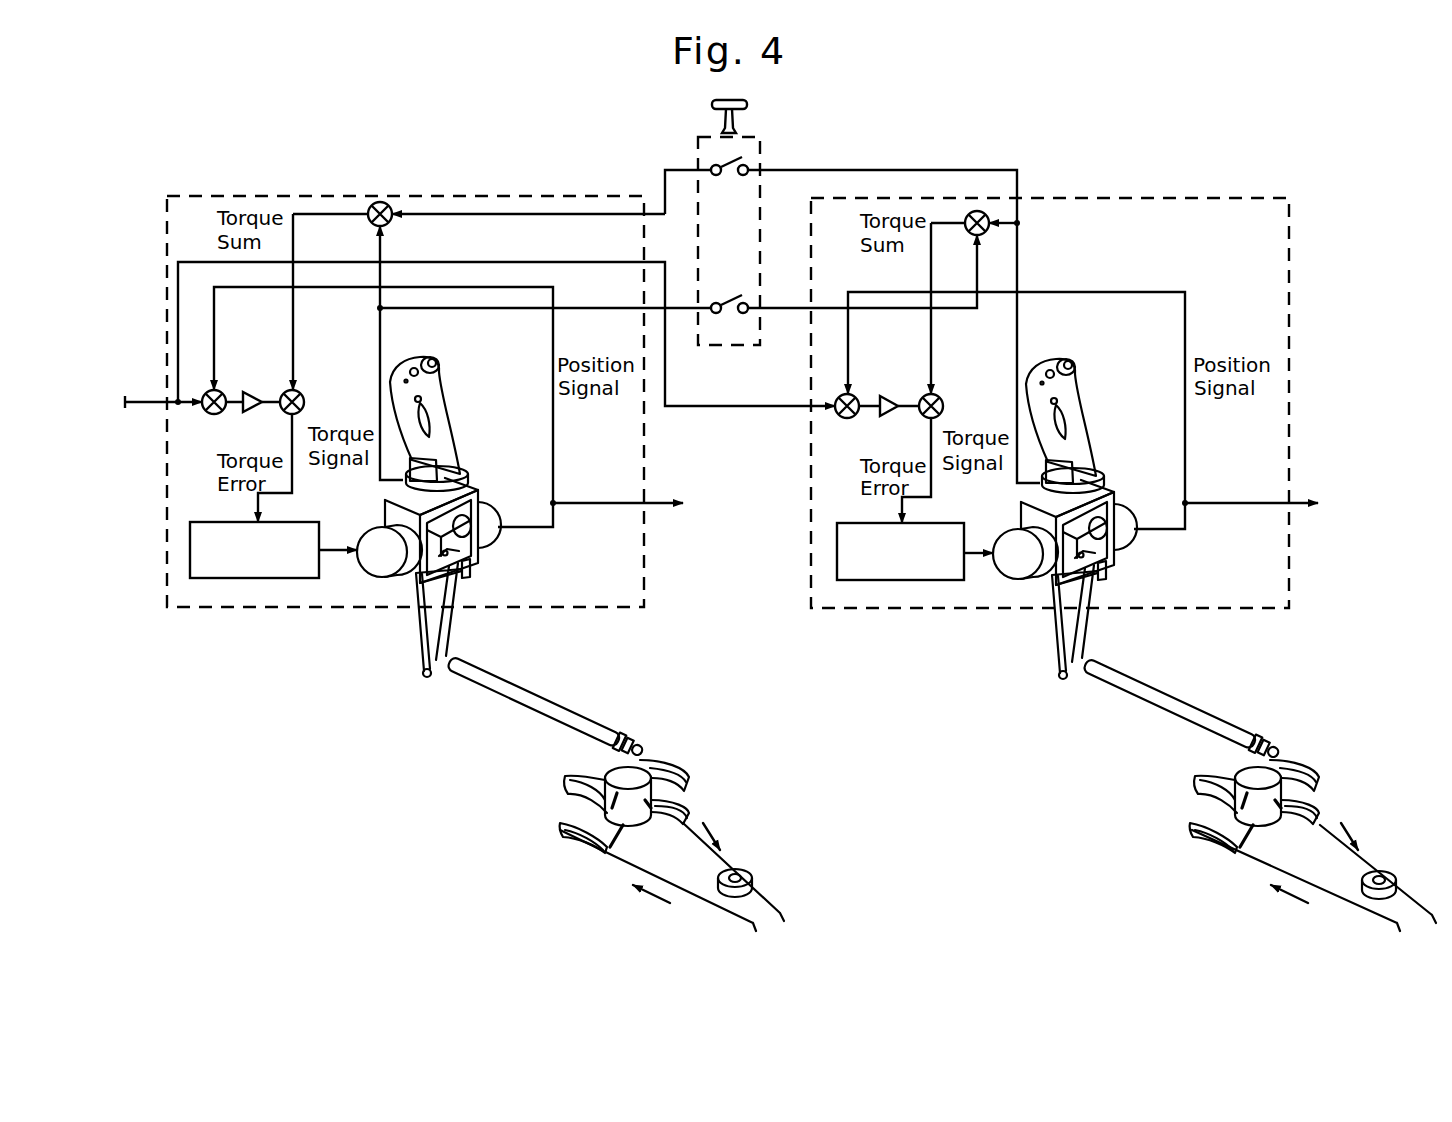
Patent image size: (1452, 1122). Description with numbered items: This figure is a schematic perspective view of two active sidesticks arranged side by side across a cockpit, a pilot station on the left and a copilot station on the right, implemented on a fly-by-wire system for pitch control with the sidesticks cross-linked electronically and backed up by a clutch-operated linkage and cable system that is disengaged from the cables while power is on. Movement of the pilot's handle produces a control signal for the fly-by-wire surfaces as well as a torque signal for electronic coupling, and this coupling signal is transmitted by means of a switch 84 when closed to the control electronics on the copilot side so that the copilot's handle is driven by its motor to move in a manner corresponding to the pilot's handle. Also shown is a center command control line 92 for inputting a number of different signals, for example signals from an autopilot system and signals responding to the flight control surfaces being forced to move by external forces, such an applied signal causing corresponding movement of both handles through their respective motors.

The switch 84 is at (757, 125).
The center command control line 92 is at (153, 398).